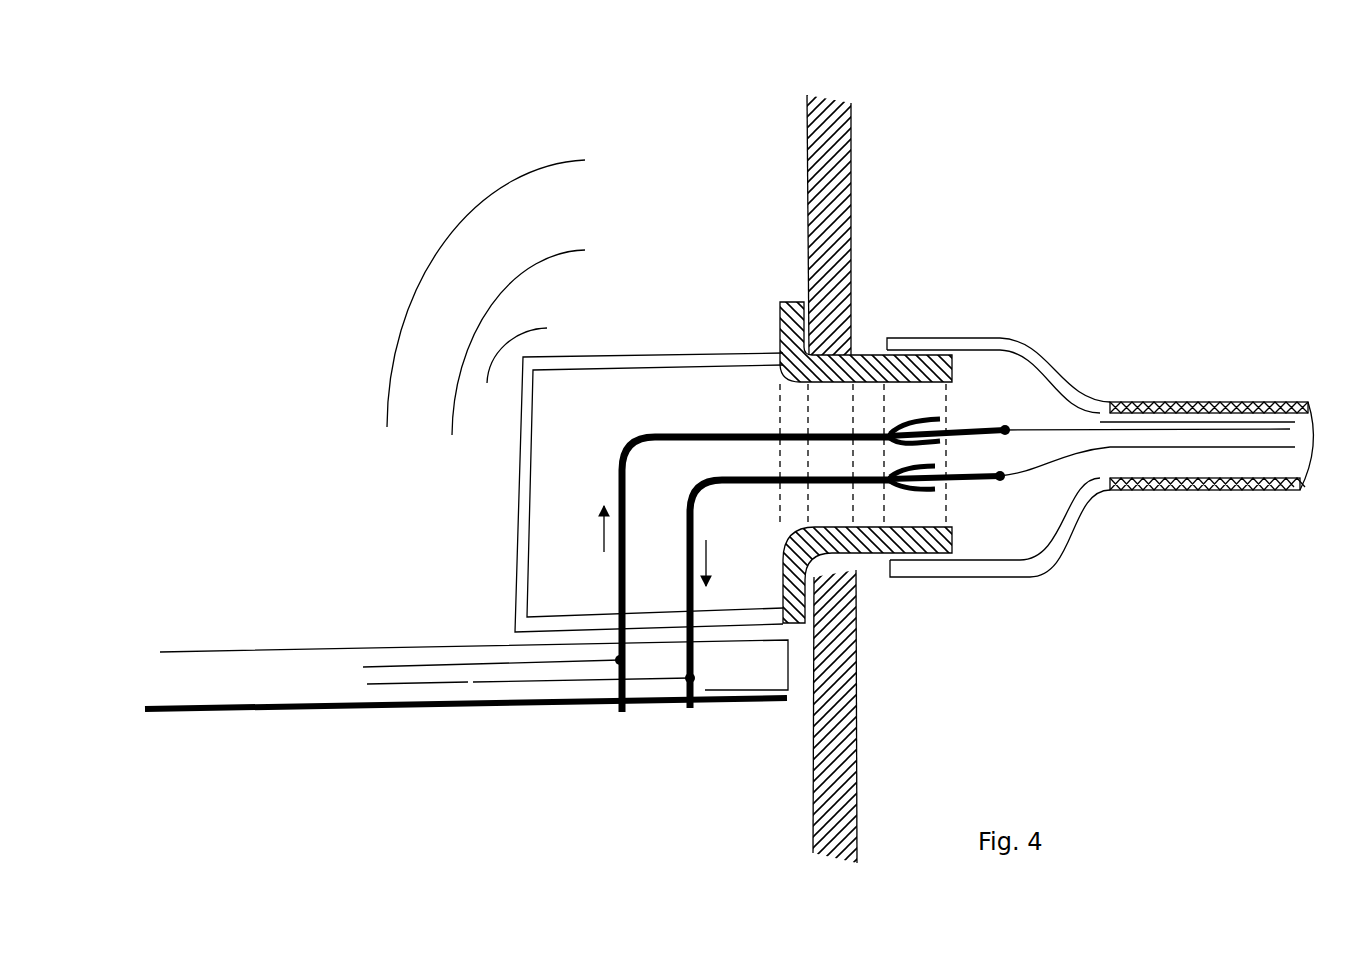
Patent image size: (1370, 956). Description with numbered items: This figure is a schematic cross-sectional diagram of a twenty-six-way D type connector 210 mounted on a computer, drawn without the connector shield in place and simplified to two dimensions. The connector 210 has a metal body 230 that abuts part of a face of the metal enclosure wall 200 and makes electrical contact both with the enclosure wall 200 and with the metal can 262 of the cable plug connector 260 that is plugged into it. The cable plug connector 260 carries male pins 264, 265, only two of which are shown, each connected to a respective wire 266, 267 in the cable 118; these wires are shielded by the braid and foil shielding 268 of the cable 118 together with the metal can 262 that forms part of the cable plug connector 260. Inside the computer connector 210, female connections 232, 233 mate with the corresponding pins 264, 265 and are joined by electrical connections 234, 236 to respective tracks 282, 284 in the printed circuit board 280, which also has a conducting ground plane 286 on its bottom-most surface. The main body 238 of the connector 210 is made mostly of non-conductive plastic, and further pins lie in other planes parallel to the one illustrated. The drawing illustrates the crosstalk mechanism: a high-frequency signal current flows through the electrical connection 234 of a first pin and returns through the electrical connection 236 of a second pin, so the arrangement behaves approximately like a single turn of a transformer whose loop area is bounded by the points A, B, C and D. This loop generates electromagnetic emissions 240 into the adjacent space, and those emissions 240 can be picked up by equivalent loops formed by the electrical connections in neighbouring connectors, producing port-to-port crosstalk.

The cable 118 is at (1193, 365).
The metal enclosure wall 200 is at (843, 153).
The D type connector 210 is at (735, 142).
The metal body 230 is at (782, 330).
The female connection 232 is at (925, 420).
The female connection 233 is at (912, 490).
The electrical connection 234 is at (672, 436).
The electrical connection 236 is at (760, 487).
The main body 238 is at (512, 553).
The electromagnetic emissions 240 is at (582, 222).
The cable plug connector 260 is at (1025, 330).
The metal can 262 is at (1027, 567).
The male pin 264 is at (968, 425).
The male pin 265 is at (962, 483).
The wire 266 is at (1178, 420).
The wire 267 is at (1202, 450).
The braid and foil shielding 268 is at (1190, 490).
The printed circuit board 280 is at (371, 710).
The track 282 is at (485, 662).
The track 284 is at (572, 683).
The conducting ground plane 286 is at (287, 710).